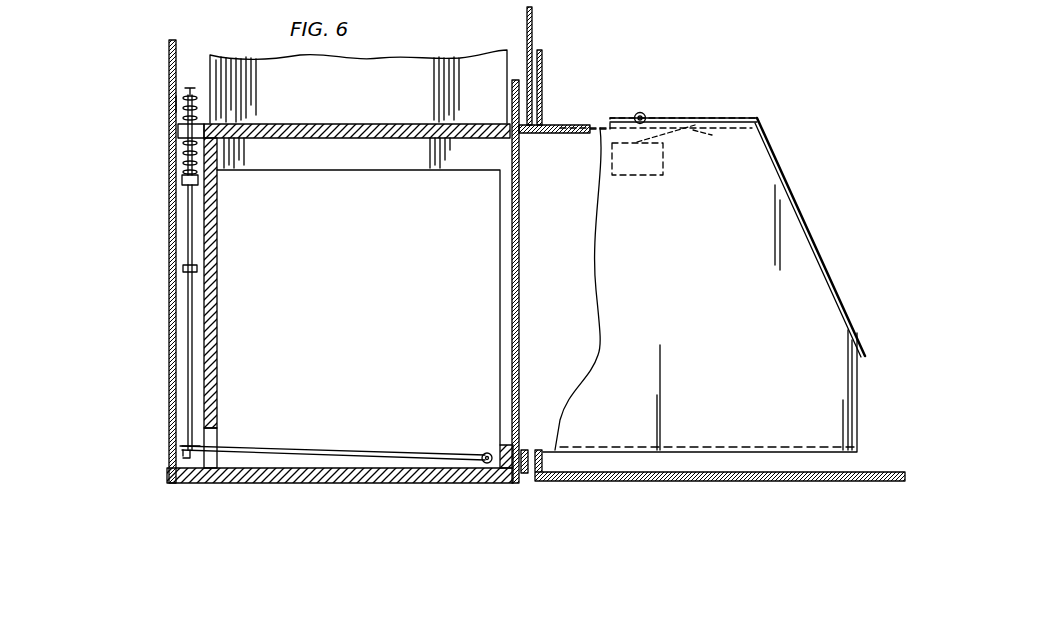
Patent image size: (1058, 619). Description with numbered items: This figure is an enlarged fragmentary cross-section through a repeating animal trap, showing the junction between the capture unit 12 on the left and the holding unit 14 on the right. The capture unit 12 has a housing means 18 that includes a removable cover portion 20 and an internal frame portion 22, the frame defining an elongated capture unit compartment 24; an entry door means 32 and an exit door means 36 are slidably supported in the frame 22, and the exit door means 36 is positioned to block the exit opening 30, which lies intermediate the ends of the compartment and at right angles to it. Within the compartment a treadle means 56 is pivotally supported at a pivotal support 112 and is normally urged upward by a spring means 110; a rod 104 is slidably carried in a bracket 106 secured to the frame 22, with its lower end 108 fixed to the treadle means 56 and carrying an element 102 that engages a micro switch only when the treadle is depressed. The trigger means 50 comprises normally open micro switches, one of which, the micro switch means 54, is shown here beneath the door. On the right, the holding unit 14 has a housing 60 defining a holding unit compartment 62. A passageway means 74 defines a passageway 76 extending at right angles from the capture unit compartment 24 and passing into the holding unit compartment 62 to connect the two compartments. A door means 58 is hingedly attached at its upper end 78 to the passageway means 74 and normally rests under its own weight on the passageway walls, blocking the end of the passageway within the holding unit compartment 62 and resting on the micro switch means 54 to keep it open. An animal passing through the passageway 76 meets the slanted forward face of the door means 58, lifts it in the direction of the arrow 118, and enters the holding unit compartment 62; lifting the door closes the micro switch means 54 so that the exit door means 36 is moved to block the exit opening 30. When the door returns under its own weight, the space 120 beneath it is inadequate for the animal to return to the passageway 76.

The capture unit means 12 is at (138, 378).
The holding unit means 14 is at (750, 500).
The housing means 18 is at (170, 65).
The removable cover portion 20 is at (172, 103).
The internal frame portion 22 is at (262, 483).
The capture unit compartment 24 is at (357, 337).
The exit opening 30 is at (510, 318).
The entry door means 32 is at (437, 60).
The exit door means 36 is at (520, 232).
The trigger means 50 is at (642, 195).
The micro switch means 54 is at (660, 178).
The treadle means 56 is at (298, 452).
The door means 58 is at (800, 210).
The housing 60 is at (535, 27).
The holding unit compartment 62 is at (624, 67).
The passageway means 74 is at (727, 347).
The passageway 76 is at (567, 317).
The upper end 78 is at (648, 108).
The element 102 is at (182, 268).
The rod 104 is at (188, 328).
The bracket 106 is at (183, 182).
The lower end 108 is at (180, 452).
The spring means 110 is at (185, 148).
The pivotal support 112 is at (485, 452).
The arrow 118 is at (925, 265).
The space 120 is at (862, 408).